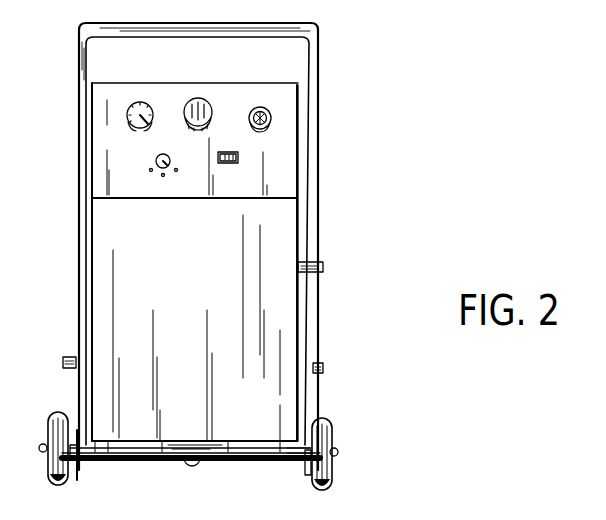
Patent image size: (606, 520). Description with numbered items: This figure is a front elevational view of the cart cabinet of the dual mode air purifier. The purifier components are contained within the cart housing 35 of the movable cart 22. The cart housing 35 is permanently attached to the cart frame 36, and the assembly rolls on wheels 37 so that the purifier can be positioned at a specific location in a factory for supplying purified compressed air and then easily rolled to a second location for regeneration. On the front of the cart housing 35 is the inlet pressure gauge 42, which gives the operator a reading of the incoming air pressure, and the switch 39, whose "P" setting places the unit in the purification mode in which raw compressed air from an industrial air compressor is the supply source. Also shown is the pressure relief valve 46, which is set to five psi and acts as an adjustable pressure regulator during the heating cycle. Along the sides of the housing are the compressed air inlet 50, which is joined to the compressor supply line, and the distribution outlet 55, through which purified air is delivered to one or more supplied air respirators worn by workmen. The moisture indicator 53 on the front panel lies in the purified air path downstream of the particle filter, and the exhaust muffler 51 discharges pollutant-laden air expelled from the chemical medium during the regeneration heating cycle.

The movable cart 22 is at (398, 99).
The cart housing 35 is at (204, 304).
The cart frame 36 is at (313, 233).
The wheels 37 is at (54, 482).
The switch 39 is at (155, 161).
The inlet pressure gauge 42 is at (145, 103).
The pressure relief valve 46 is at (204, 99).
The compressed air inlet 50 is at (321, 364).
The exhaust muffler 51 is at (323, 265).
The moisture indicator 53 is at (271, 113).
The distribution outlet 55 is at (64, 358).